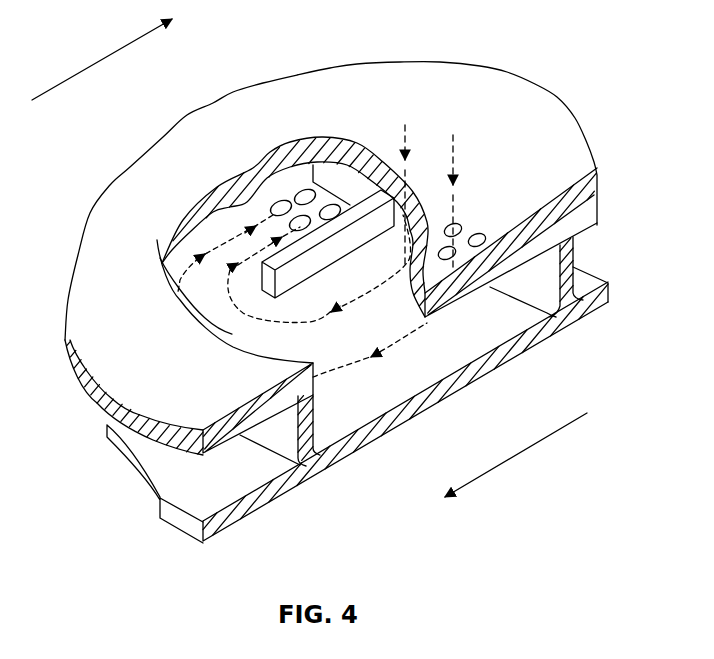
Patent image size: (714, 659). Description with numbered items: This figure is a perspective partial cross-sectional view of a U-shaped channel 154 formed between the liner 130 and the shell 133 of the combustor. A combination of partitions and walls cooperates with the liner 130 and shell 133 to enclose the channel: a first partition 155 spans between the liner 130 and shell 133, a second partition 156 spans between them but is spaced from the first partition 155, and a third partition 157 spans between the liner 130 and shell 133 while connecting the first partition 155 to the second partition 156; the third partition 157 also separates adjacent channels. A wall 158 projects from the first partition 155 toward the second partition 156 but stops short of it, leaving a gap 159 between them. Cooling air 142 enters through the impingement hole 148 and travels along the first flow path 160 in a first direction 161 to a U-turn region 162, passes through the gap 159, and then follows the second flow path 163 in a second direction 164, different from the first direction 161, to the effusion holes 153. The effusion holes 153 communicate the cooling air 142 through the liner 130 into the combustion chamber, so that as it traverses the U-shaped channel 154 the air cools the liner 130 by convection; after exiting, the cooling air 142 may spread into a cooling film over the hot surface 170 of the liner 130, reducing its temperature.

The liner 130 is at (257, 503).
The shell 133 is at (573, 221).
The cooling air 142 is at (453, 167).
The impingement hole 148 is at (588, 176).
The effusion holes 153 is at (303, 197).
The U-shaped channel 154 is at (506, 64).
The first partition 155 is at (565, 272).
The second partition 156 is at (307, 427).
The third partition 157 is at (247, 202).
The wall 158 is at (377, 160).
The gap 159 is at (163, 282).
The first flow path 160 is at (417, 378).
The first direction 161 is at (517, 460).
The U-turn region 162 is at (256, 334).
The second flow path 163 is at (211, 231).
The second direction 164 is at (103, 55).
The hot surface 170 is at (517, 356).